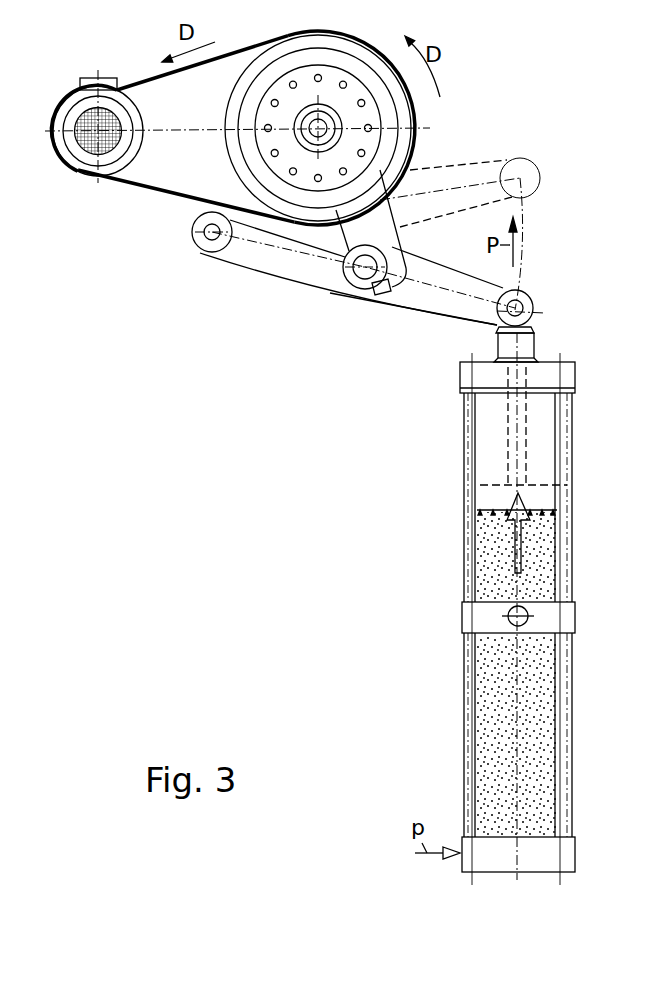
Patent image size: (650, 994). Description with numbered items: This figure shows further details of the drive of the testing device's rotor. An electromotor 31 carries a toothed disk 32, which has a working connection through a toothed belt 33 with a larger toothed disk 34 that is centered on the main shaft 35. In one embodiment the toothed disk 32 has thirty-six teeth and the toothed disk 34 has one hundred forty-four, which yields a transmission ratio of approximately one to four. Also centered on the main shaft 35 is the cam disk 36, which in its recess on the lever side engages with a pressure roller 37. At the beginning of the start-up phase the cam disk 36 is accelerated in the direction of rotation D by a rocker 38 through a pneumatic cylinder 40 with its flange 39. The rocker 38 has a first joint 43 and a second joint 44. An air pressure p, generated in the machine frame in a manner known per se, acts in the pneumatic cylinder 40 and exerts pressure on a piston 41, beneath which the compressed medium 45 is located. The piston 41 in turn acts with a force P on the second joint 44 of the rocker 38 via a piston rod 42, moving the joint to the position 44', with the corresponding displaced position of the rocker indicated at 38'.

The electromotor 31 is at (58, 143).
The toothed disk 32 is at (112, 160).
The toothed belt 33 is at (160, 186).
The toothed disk 34 is at (252, 182).
The main shaft 35 is at (318, 130).
The cam disk 36 is at (333, 200).
The pressure roller 37 is at (365, 275).
The rocker 38 is at (416, 317).
The rocker (displaced position) 38' is at (456, 179).
The flange 39 is at (483, 372).
The pneumatic cylinder 40 is at (465, 563).
The piston 41 is at (495, 492).
The piston rod 42 is at (508, 433).
The first joint 43 is at (200, 253).
The second joint 44 is at (540, 297).
The second joint (displaced position) 44' is at (539, 165).
The compressed medium 45 is at (497, 700).